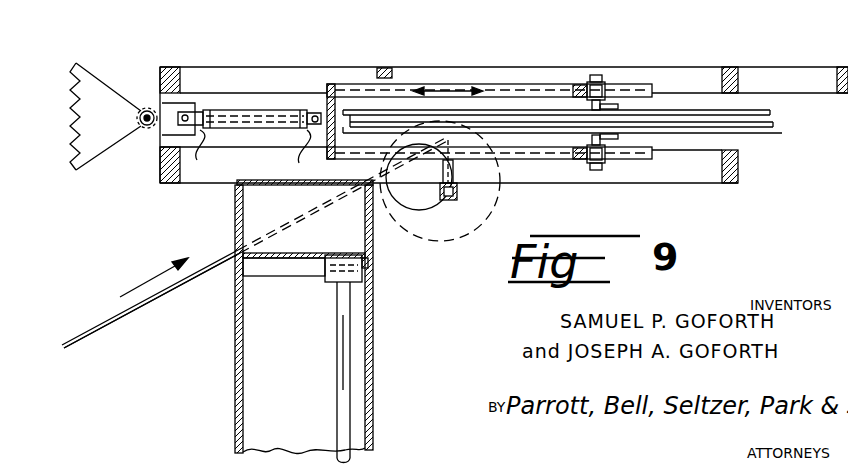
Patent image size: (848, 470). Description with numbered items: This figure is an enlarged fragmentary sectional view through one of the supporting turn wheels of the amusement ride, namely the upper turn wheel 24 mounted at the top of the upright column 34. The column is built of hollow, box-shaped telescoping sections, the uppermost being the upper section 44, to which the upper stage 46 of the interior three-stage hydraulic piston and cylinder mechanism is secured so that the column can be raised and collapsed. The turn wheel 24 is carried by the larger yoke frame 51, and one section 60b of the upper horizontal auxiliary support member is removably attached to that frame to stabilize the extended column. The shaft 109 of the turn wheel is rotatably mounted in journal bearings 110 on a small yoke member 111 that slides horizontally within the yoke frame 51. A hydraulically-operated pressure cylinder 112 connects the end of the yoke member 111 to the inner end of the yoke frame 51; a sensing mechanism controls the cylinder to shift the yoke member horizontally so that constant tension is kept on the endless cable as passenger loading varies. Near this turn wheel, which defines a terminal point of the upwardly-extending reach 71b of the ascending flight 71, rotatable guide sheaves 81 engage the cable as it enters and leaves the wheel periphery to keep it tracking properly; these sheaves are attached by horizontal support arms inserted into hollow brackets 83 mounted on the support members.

The upper turn wheel 24 is at (768, 120).
The upright column 34 is at (237, 365).
The upper section 44 is at (368, 280).
The upper stage 46 is at (343, 320).
The yoke frame 51 is at (258, 66).
The section of upper horizontal member 60b is at (101, 88).
The ascending flight 71 is at (108, 316).
The upwardly-extending reach 71b is at (97, 324).
The guide sheaves 81 is at (432, 202).
The hollow brackets 83 is at (457, 192).
The shaft 109 is at (558, 82).
The journal bearings 110 is at (572, 92).
The yoke member 111 is at (345, 84).
The pressure cylinder 112 is at (255, 110).